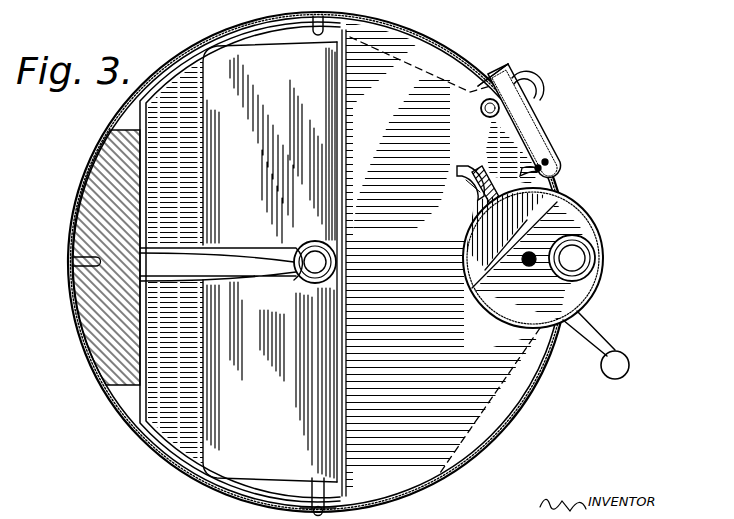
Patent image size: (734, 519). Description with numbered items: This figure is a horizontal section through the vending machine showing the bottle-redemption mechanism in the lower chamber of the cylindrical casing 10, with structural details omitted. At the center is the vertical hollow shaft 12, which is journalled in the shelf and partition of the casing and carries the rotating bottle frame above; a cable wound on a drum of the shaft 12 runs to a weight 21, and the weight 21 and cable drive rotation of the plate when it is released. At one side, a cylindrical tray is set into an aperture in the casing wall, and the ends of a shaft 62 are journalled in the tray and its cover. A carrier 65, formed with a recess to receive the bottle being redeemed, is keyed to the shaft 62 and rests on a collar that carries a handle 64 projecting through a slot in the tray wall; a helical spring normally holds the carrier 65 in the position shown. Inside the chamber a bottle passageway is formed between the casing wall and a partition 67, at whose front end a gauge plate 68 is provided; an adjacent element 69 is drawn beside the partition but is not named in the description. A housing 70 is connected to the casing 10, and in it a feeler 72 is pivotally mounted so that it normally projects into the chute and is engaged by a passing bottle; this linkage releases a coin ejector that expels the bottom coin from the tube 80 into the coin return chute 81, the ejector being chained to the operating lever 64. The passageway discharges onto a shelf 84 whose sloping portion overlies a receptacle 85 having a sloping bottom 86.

The cylindrical casing 10 is at (197, 47).
The vertical hollow shaft 12 is at (338, 252).
The weight 21 is at (78, 302).
The shaft 62 is at (534, 258).
The handle 64 is at (597, 346).
The carrier 65 is at (556, 276).
The partition 67 is at (465, 168).
The gauge plate 68 is at (516, 177).
The bar 69 is at (500, 221).
The housing 70 is at (492, 80).
The feeler 72 is at (548, 160).
The tube 80 is at (480, 104).
The coin return chute 81 is at (538, 80).
The shelf 84 is at (443, 256).
The receptacle 85 is at (177, 440).
The sloping bottom 86 is at (162, 165).